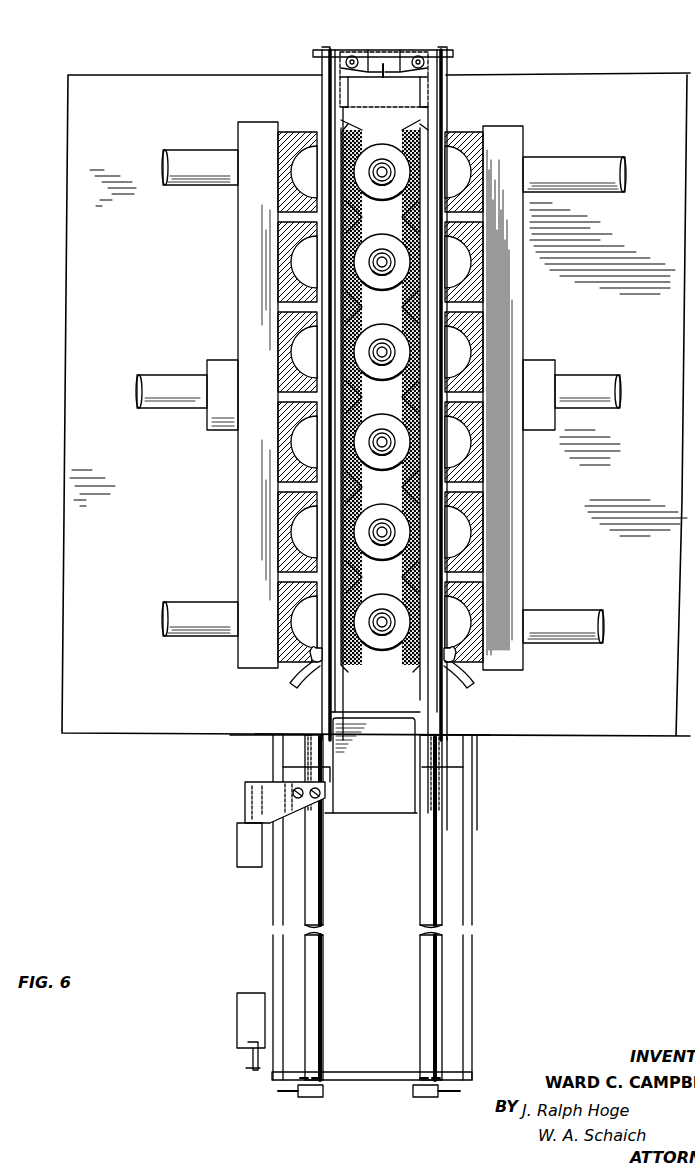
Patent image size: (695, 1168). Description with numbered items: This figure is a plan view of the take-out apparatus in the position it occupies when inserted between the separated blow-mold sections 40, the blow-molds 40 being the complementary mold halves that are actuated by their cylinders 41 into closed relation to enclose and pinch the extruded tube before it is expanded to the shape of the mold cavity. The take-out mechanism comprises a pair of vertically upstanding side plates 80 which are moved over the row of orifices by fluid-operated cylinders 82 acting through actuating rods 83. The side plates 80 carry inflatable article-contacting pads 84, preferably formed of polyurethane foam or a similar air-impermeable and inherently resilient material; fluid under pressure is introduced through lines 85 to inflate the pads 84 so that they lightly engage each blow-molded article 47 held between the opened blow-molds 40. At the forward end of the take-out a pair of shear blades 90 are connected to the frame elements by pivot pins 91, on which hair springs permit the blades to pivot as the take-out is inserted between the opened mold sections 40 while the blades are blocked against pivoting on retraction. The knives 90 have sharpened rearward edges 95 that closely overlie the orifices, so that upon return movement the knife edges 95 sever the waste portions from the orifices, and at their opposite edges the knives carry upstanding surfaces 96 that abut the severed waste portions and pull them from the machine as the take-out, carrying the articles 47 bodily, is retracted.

The blow-molds 40 is at (266, 251).
The cylinders 41 is at (180, 393).
The article 47 is at (387, 320).
The side plates 80 is at (427, 208).
The fluid-operated cylinders 82 is at (420, 903).
The actuating rods 83 is at (323, 95).
The inflatable article-contacting pads 84 is at (403, 388).
The lines 85 is at (304, 694).
The shear blades 90 is at (395, 58).
The pivot pins 91 is at (348, 54).
The sharpened rearward edges 95 is at (397, 73).
The upstanding surfaces 96 is at (375, 58).